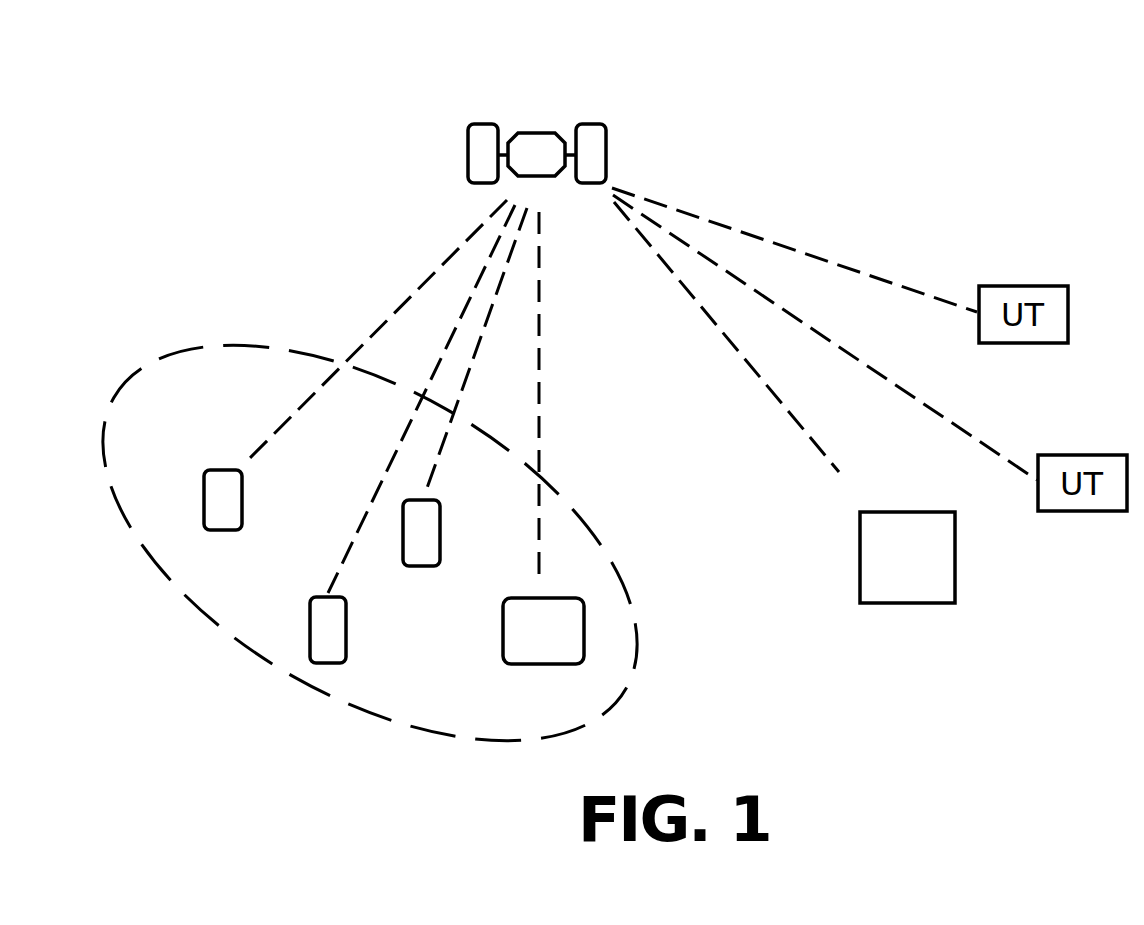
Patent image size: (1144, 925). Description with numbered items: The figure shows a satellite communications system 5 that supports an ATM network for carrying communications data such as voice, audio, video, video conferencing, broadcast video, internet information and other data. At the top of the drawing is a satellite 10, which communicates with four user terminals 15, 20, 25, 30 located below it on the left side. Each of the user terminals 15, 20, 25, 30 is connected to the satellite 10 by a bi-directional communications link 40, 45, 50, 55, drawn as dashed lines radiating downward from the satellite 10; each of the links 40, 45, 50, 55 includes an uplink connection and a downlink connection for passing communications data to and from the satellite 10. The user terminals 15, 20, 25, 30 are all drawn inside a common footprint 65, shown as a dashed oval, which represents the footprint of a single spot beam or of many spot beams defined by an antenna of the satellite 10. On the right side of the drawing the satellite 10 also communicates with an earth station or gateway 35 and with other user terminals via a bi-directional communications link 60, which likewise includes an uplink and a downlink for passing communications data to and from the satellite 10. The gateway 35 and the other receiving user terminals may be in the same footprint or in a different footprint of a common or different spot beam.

The satellite communications system 5 is at (258, 175).
The satellite 10 is at (534, 133).
The user terminal 15 is at (222, 470).
The user terminal 20 is at (312, 600).
The user terminal 25 is at (428, 566).
The user terminal 30 is at (503, 625).
The gateway 35 is at (860, 556).
The bi-directional communications link 40 is at (409, 300).
The bi-directional communications link 45 is at (392, 458).
The bi-directional communications link 50 is at (444, 440).
The bi-directional communications link 55 is at (540, 395).
The bi-directional communications link 60 is at (704, 312).
The common footprint 65 is at (191, 350).